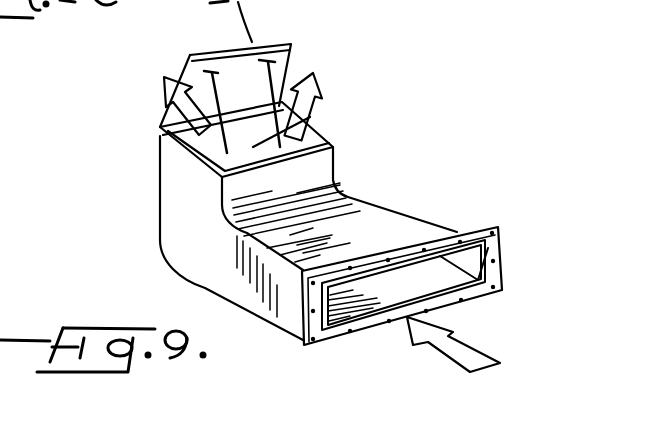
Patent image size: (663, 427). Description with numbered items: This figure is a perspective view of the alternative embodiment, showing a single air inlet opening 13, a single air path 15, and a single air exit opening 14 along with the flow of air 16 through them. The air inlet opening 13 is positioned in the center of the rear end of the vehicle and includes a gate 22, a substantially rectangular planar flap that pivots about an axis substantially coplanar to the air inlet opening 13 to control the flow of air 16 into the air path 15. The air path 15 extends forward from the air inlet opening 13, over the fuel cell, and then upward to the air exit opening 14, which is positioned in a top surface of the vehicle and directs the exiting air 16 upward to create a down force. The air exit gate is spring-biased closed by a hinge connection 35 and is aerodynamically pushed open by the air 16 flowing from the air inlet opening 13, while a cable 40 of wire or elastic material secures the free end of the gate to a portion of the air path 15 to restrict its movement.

The air inlet opening 13 is at (352, 303).
The air exit opening 14 is at (308, 117).
The air path 15 is at (371, 205).
The air 16 is at (172, 100).
The gate 22 is at (500, 248).
The hinge connection 35 is at (165, 145).
The cable 40 is at (193, 73).